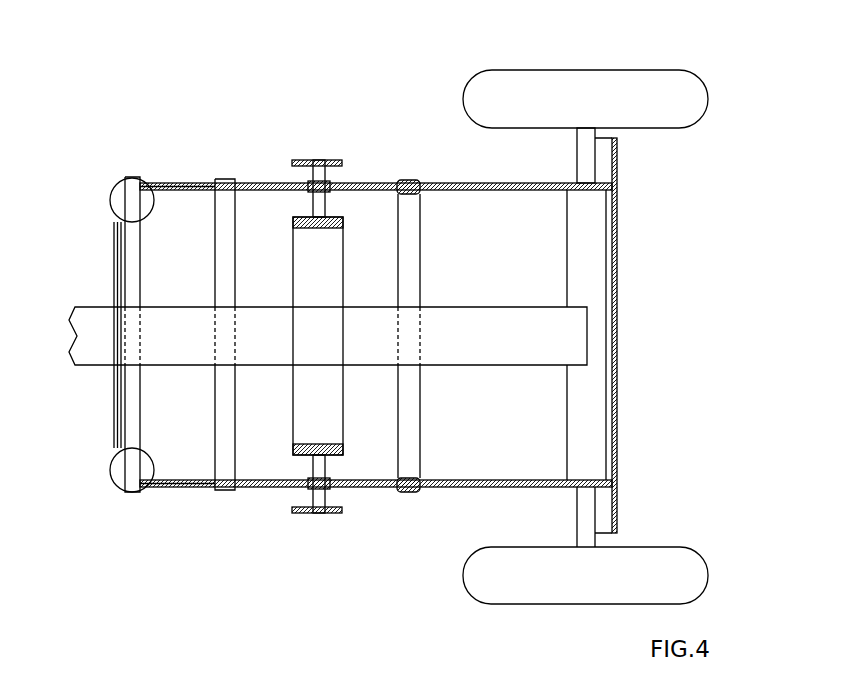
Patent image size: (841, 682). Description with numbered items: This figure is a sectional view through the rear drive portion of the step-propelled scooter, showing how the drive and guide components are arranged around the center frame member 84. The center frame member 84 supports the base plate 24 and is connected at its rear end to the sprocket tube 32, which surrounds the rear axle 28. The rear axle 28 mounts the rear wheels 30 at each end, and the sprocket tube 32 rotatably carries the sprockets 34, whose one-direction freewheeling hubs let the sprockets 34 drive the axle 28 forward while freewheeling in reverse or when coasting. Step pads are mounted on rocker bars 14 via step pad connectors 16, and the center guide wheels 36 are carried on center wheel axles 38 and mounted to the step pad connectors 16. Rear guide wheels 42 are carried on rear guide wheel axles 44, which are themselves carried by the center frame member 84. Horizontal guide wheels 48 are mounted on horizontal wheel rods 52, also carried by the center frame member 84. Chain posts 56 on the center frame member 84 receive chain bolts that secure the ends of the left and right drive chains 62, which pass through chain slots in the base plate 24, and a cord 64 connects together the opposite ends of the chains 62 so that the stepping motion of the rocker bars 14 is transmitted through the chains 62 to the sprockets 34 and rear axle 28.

The rocker bar 14 is at (338, 290).
The step pad connector 16 is at (338, 160).
The base plate 24 is at (617, 358).
The rear axle 28 is at (600, 150).
The rear wheel 30 is at (641, 72).
The sprocket tube 32 is at (595, 235).
The sprocket 34 is at (588, 194).
The center guide wheel 36 is at (333, 184).
The center wheel axle 38 is at (300, 162).
The rear guide wheel 42 is at (410, 196).
The rear guide wheel axle 44 is at (415, 252).
The horizontal guide wheel 48 is at (118, 198).
The horizontal wheel rod 52 is at (130, 177).
The chain post 56 is at (218, 205).
The drive chain 62 is at (433, 183).
The cord 64 is at (115, 268).
The center frame member 84 is at (572, 340).